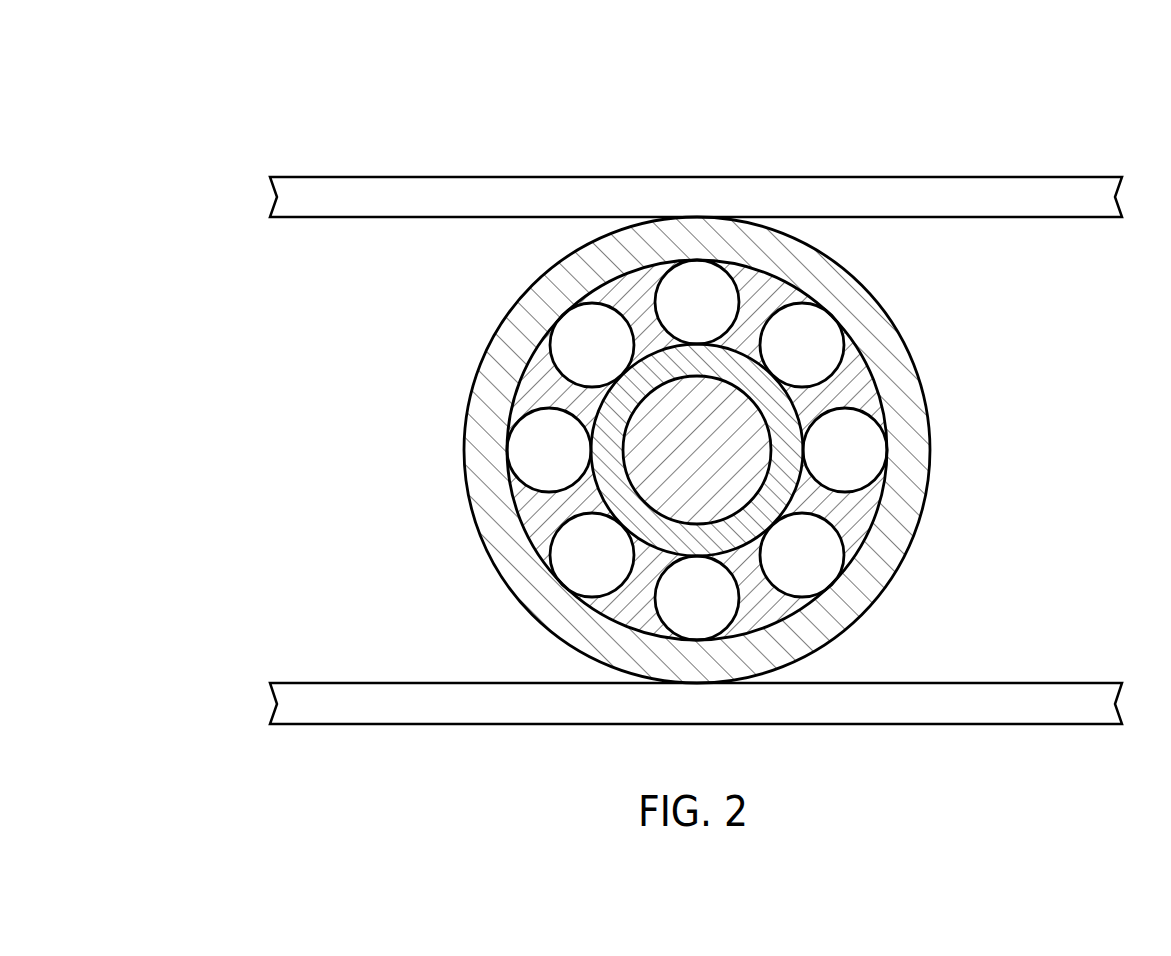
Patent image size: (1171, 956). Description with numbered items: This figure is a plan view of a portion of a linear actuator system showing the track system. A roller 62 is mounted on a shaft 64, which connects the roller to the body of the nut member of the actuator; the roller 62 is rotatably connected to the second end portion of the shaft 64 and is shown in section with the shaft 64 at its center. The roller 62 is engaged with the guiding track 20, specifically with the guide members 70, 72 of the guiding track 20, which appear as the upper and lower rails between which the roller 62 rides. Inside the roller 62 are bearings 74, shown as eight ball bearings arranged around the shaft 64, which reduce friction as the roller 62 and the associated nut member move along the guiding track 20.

The guiding track 20 is at (1104, 143).
The roller 62 is at (930, 440).
The shaft 64 is at (748, 480).
The guide member 70 is at (952, 177).
The guide member 72 is at (995, 683).
The bearings 74 is at (715, 293).